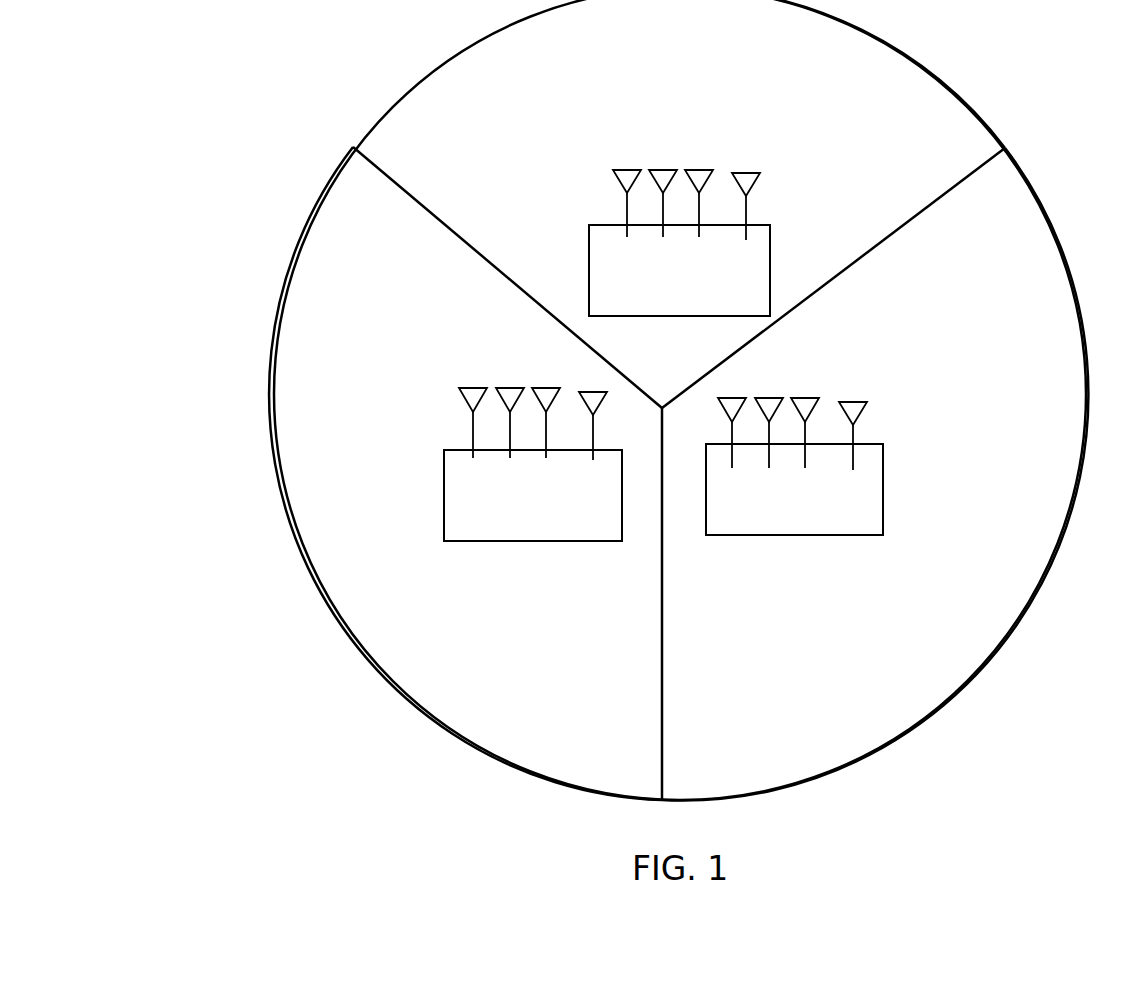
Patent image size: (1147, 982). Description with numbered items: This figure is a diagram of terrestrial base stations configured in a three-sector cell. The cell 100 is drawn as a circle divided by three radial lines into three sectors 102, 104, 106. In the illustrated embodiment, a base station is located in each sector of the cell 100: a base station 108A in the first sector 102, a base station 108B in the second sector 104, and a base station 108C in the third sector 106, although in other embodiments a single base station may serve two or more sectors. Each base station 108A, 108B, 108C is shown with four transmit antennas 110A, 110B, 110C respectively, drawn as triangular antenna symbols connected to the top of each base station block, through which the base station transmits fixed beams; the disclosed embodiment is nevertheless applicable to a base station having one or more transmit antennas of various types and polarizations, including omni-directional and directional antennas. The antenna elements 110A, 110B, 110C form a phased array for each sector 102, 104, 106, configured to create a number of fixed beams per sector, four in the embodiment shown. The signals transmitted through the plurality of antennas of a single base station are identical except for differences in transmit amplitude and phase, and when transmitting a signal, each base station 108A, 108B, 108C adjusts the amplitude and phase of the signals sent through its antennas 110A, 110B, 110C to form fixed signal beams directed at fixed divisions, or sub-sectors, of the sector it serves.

The cell 100 is at (322, 669).
The sector 102 is at (988, 110).
The sector 104 is at (1053, 545).
The sector 106 is at (275, 332).
The base station 108A is at (685, 316).
The base station 108B is at (797, 535).
The base station 108C is at (530, 541).
The transmit antennas 110A is at (646, 165).
The transmit antennas 110B is at (753, 390).
The transmit antennas 110C is at (468, 382).